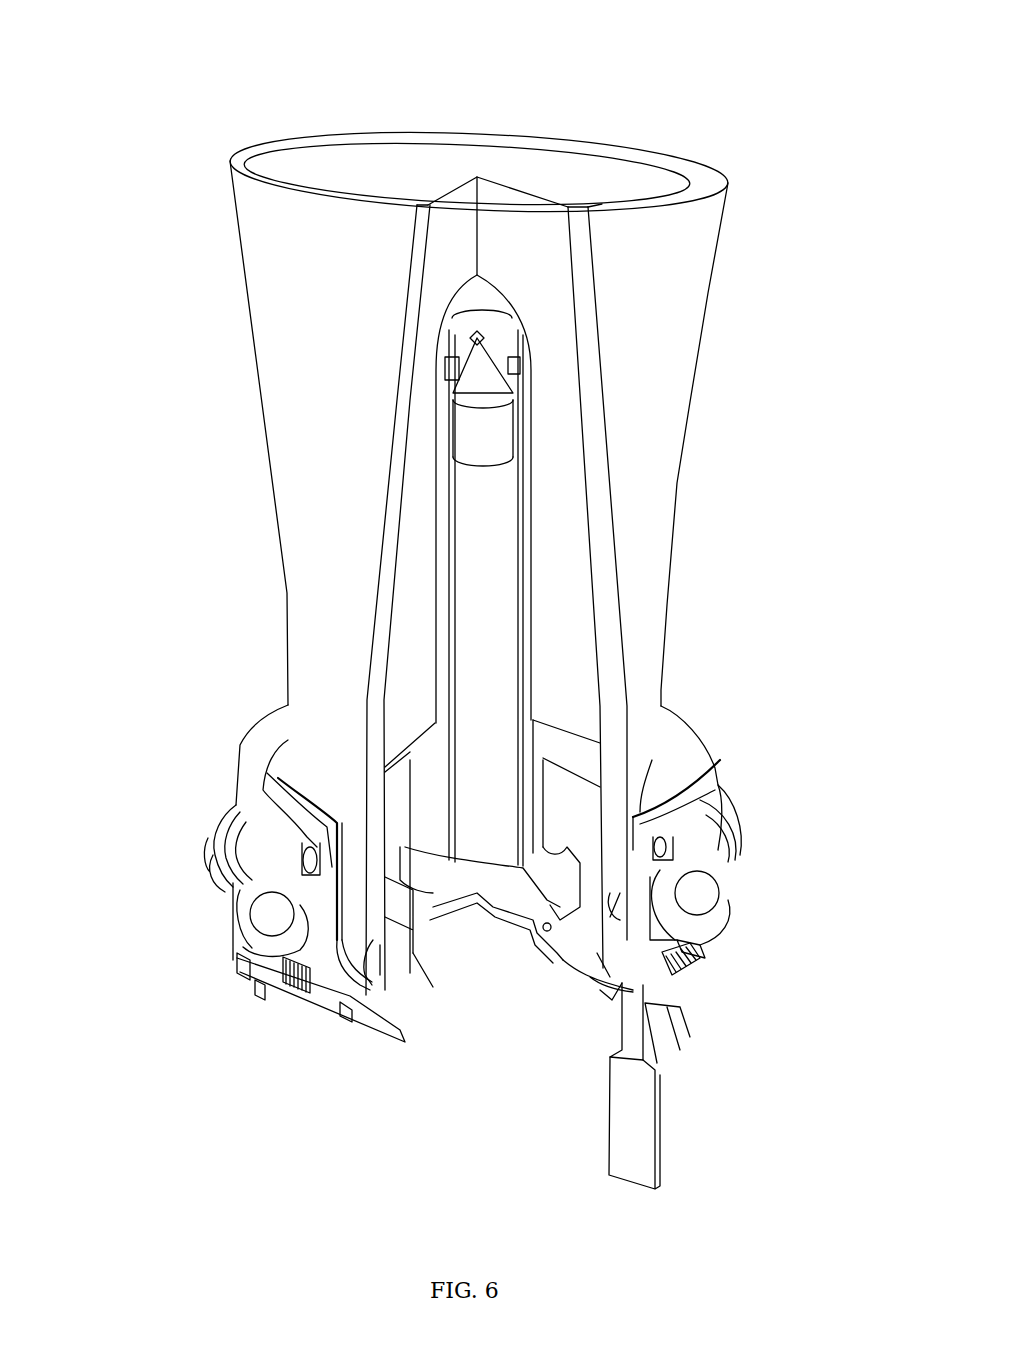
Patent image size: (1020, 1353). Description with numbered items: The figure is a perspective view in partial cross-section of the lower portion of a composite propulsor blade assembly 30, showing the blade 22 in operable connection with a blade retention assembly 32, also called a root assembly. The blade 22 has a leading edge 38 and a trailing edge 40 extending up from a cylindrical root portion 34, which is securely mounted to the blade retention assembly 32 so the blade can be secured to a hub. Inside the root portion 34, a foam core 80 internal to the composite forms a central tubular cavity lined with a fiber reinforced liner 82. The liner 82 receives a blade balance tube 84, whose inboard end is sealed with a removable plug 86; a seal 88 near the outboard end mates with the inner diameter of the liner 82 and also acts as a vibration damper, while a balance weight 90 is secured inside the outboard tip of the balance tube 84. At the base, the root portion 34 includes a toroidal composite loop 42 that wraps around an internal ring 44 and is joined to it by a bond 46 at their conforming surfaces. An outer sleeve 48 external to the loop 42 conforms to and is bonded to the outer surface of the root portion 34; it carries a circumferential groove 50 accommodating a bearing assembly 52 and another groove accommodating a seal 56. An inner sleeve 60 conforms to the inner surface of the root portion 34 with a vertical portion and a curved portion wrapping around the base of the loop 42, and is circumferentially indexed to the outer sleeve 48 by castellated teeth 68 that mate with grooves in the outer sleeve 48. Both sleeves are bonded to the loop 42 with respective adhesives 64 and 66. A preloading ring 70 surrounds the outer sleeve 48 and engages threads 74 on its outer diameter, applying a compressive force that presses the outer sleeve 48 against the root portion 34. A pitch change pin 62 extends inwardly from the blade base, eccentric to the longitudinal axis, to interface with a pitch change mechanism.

The blade 22 is at (523, 207).
The blade assembly 30 is at (707, 59).
The blade retention assembly 32 is at (119, 903).
The root portion 34 is at (620, 893).
The leading edge 38 is at (267, 447).
The trailing edge 40 is at (680, 488).
The toroidal composite loop 42 is at (637, 990).
The internal ring 44 is at (370, 983).
The bond 46 is at (637, 973).
The outer sleeve 48 is at (680, 944).
The circumferential groove 50 is at (305, 933).
The bearing assembly 52 is at (717, 883).
The seal 56 is at (676, 852).
The inner sleeve 60 is at (582, 962).
The pitch change pin 62 is at (608, 1140).
The adhesive 64 is at (615, 980).
The adhesive 66 is at (680, 800).
The castellated teeth 68 is at (347, 1005).
The preloading ring 70 is at (697, 963).
The threads 74 is at (297, 985).
The foam core 80 is at (510, 224).
The fiber reinforced liner 82 is at (434, 557).
The blade balance tube 84 is at (451, 483).
The removable plug 86 is at (493, 908).
The seal 88 is at (453, 378).
The balance weight 90 is at (487, 423).